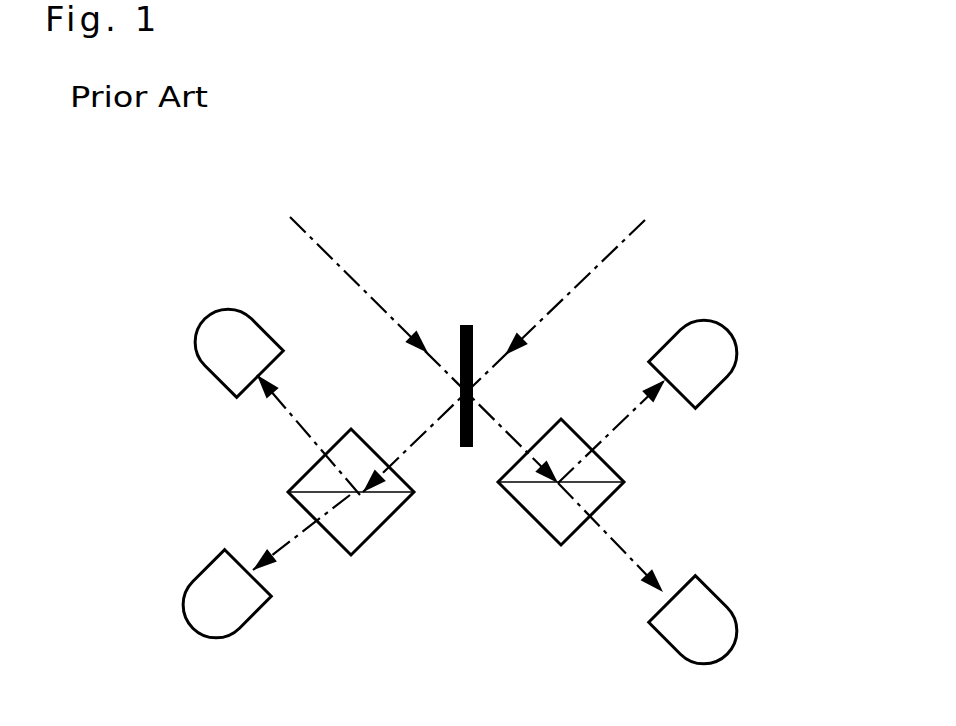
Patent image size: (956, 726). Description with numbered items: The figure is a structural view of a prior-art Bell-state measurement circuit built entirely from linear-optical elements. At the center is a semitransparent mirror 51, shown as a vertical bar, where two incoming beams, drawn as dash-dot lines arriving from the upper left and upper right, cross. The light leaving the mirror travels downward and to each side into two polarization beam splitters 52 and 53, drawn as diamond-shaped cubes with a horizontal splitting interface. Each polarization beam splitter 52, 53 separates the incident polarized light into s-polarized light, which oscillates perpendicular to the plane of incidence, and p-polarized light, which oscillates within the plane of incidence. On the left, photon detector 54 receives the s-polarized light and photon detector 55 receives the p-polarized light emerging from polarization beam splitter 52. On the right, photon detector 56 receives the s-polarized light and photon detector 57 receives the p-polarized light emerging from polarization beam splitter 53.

The semitransparent mirror 51 is at (460, 327).
The polarization beam splitter 52 is at (393, 514).
The polarization beam splitter 53 is at (523, 508).
The photon detector 54 is at (207, 322).
The photon detector 55 is at (188, 608).
The photon detector 56 is at (733, 330).
The photon detector 57 is at (738, 630).